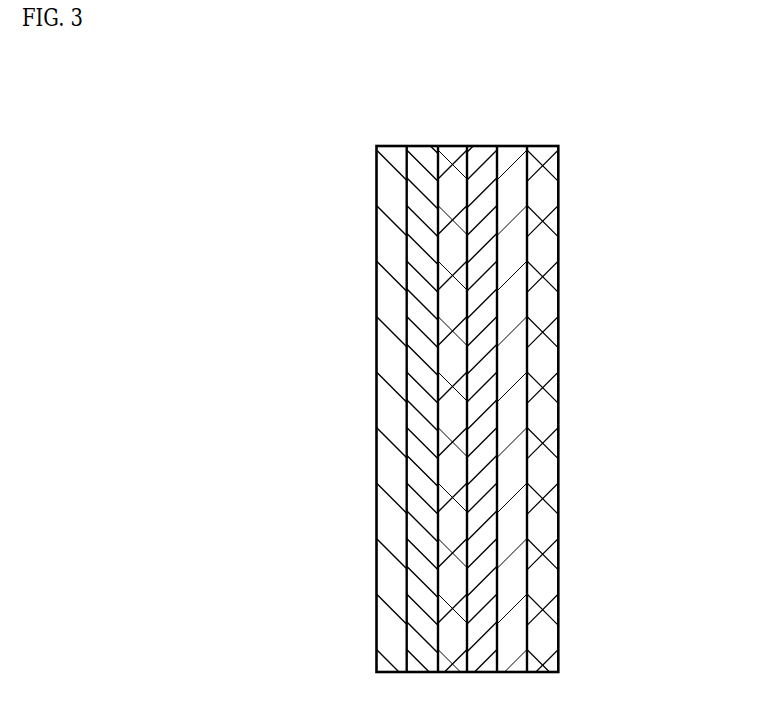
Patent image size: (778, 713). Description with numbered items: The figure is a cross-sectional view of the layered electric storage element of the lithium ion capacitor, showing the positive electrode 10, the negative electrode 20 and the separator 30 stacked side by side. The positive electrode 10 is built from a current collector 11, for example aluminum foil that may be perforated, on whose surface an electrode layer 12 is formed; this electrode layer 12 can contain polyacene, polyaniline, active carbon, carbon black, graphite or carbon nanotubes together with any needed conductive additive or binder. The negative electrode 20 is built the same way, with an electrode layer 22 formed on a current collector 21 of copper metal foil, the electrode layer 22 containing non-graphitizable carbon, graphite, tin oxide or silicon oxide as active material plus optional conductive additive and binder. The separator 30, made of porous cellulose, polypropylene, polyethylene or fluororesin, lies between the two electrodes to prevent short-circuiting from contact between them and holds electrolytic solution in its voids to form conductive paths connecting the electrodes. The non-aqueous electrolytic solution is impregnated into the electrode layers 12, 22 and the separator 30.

The positive electrode 10 is at (267, 198).
The current collector 11 is at (387, 228).
The electrode layer 12 is at (412, 300).
The negative electrode 20 is at (672, 492).
The current collector 21 is at (520, 508).
The electrode layer 22 is at (490, 590).
The separator 30 is at (447, 393).